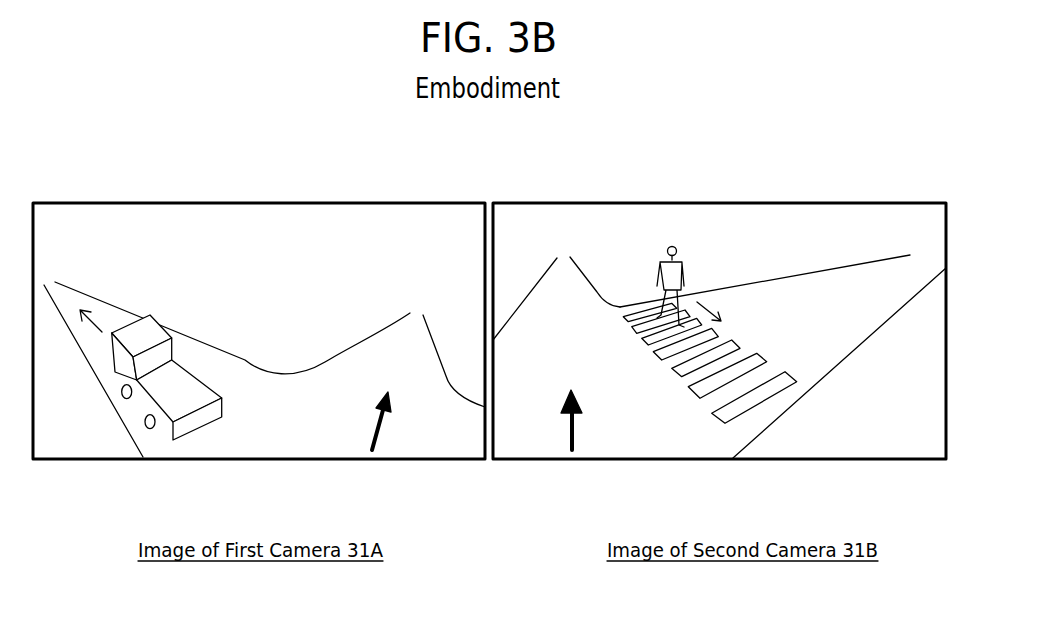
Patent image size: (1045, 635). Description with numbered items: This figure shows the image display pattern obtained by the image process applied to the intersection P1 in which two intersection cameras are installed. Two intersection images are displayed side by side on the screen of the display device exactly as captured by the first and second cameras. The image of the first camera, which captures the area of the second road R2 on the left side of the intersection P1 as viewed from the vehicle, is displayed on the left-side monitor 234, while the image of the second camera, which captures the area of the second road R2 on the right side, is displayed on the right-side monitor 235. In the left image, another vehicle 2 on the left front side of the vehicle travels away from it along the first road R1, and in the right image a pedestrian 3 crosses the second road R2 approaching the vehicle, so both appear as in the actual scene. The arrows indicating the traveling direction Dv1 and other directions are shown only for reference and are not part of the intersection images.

The left-side monitor 234 is at (313, 203).
The right-side monitor 235 is at (765, 203).
The another vehicle 2 is at (137, 332).
The pedestrian 3 is at (658, 250).
The first road R1 is at (417, 350).
The second road R2 is at (70, 298).
The traveling direction Dv1 is at (373, 433).
The intersection P1 is at (423, 425).